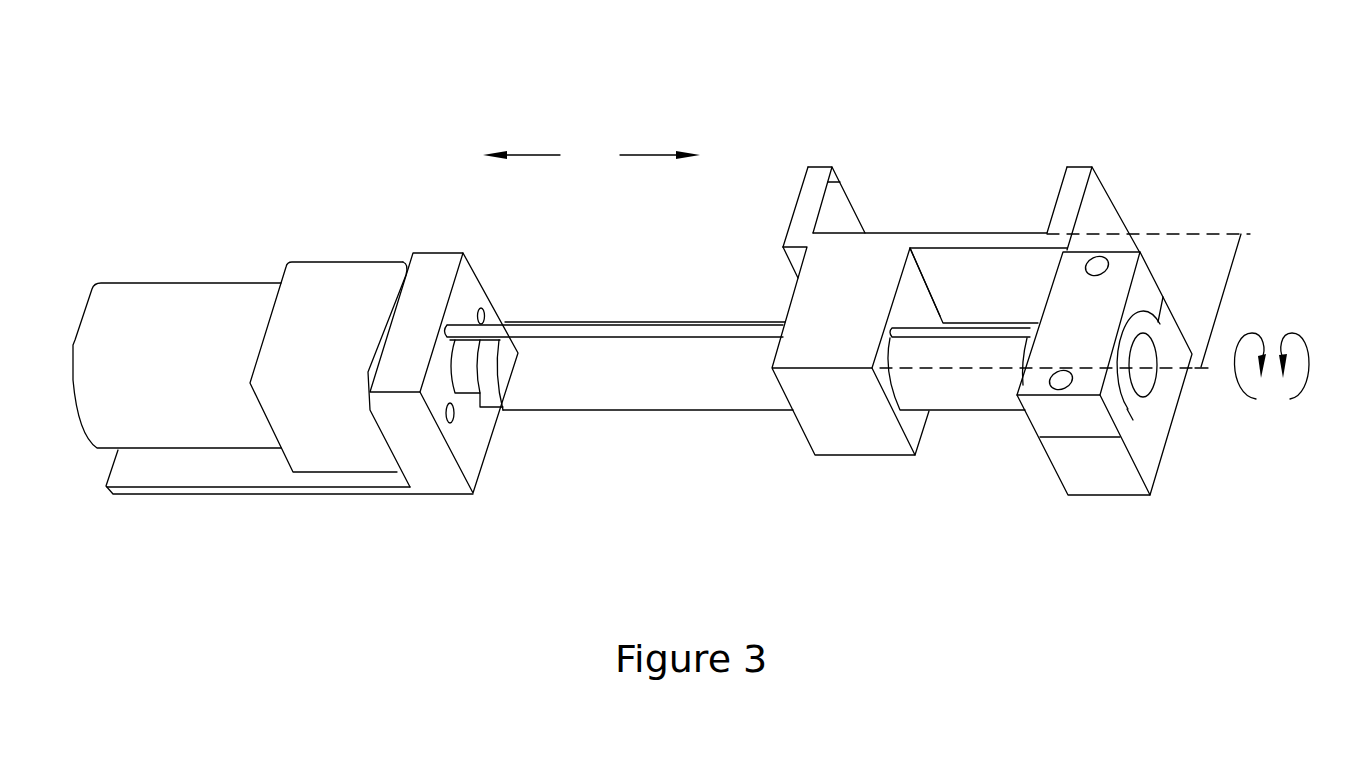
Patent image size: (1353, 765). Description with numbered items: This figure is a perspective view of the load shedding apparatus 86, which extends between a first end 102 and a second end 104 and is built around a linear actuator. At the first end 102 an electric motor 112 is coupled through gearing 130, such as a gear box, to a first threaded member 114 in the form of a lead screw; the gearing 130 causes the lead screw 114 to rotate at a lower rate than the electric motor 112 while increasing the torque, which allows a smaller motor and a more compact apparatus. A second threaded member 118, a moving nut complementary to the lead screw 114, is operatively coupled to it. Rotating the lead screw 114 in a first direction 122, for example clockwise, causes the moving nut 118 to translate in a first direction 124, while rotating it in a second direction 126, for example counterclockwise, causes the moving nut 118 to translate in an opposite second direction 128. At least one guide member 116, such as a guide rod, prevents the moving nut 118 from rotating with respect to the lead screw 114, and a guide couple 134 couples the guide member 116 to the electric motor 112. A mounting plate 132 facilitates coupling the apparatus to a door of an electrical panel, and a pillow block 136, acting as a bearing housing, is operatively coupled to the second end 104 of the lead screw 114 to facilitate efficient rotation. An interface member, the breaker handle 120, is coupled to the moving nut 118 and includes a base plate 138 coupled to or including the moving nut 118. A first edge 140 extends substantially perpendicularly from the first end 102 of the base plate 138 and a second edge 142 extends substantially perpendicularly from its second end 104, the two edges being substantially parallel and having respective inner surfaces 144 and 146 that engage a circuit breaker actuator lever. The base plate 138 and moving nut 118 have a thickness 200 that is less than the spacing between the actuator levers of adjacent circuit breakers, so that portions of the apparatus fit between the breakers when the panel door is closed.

The load shedding apparatus 86 is at (826, 122).
The first end 102 is at (226, 140).
The second end 104 is at (1138, 168).
The electric motor 112 is at (90, 449).
The first threaded member 114 is at (618, 412).
The guide member 116 is at (500, 408).
The second threaded member 118 is at (857, 456).
The breaker handle 120 is at (794, 213).
The first direction 122 is at (1296, 398).
The first direction 124 is at (535, 153).
The second direction 126 is at (1250, 398).
The second direction 128 is at (652, 153).
The gearing 130 is at (338, 262).
The mounting plate 132 is at (190, 497).
The guide couple 134 is at (440, 253).
The pillow block 136 is at (1100, 497).
The base plate 138 is at (962, 233).
The first edge 140 is at (828, 182).
The second edge 142 is at (1078, 167).
The inner surface 144 is at (855, 205).
The inner surface 146 is at (1031, 179).
The thickness 200 is at (1227, 273).